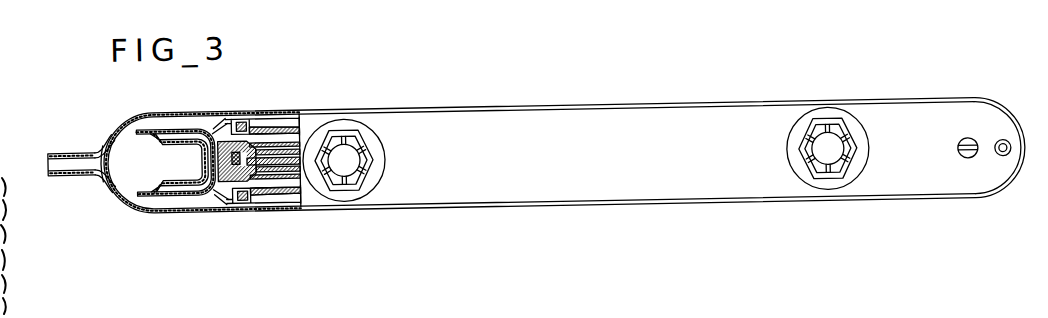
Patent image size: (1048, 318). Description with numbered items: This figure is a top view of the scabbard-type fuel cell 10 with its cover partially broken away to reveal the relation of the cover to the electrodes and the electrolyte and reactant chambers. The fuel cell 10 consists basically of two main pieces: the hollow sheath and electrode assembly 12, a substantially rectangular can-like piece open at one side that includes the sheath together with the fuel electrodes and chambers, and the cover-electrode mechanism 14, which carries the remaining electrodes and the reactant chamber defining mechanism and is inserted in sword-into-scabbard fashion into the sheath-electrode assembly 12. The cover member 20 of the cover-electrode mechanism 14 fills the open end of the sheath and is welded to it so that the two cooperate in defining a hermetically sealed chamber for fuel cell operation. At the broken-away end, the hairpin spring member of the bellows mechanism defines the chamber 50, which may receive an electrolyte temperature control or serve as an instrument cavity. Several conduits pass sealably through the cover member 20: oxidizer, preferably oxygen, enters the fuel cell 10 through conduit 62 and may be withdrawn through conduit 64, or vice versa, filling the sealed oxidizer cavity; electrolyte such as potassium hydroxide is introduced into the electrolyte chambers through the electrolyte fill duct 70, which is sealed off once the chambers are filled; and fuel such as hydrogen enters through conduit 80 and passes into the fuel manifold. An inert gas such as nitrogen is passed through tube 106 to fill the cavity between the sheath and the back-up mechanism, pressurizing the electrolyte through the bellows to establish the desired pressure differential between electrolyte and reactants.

The scabbard or folded type fuel cell 10 is at (551, 91).
The hollow sheath and electrode assembly 12 is at (209, 106).
The cover-electrode mechanism 14 is at (455, 117).
The cover member 20 is at (686, 131).
The chamber 50 is at (163, 161).
The conduit 62 is at (344, 160).
The conduit 64 is at (833, 157).
The electrolyte fill duct 70 is at (967, 152).
The conduit 80 is at (1005, 154).
The tube 106 is at (76, 163).